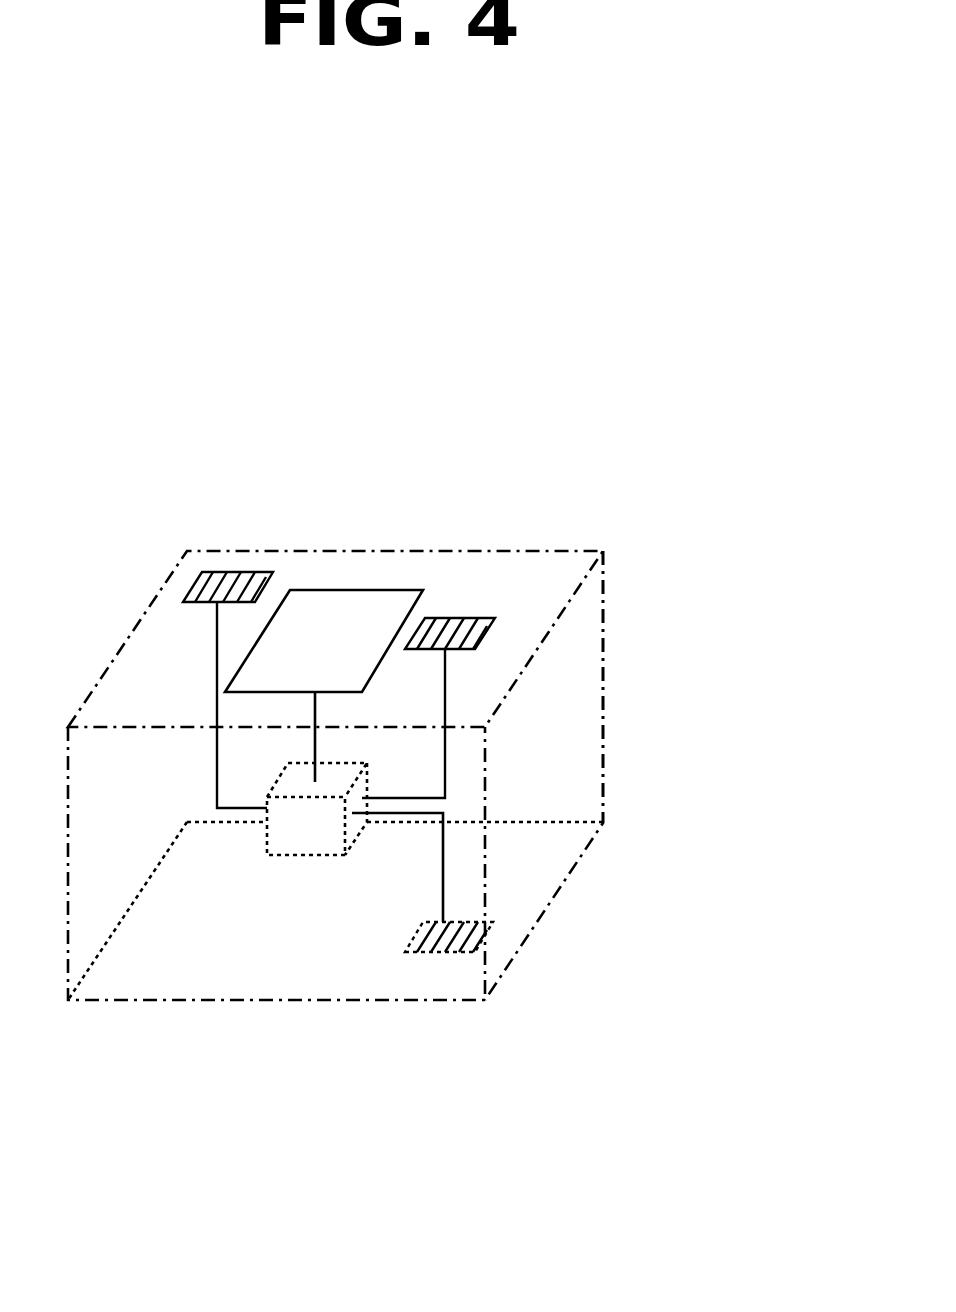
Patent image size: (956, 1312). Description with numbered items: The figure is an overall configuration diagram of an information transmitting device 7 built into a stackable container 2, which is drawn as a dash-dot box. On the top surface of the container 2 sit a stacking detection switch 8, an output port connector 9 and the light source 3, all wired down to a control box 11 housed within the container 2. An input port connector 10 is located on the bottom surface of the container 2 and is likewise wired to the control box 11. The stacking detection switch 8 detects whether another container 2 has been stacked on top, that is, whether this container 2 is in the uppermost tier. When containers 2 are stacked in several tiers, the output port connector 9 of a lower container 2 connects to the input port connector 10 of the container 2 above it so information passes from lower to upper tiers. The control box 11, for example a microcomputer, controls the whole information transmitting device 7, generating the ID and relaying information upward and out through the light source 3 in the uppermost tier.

The container 2 is at (603, 678).
The light source 3 is at (330, 588).
The information transmitting device 7 is at (570, 494).
The stacking detection switch 8 is at (230, 572).
The output port connector 9 is at (448, 618).
The input port connector 10 is at (425, 957).
The control box 11 is at (293, 857).